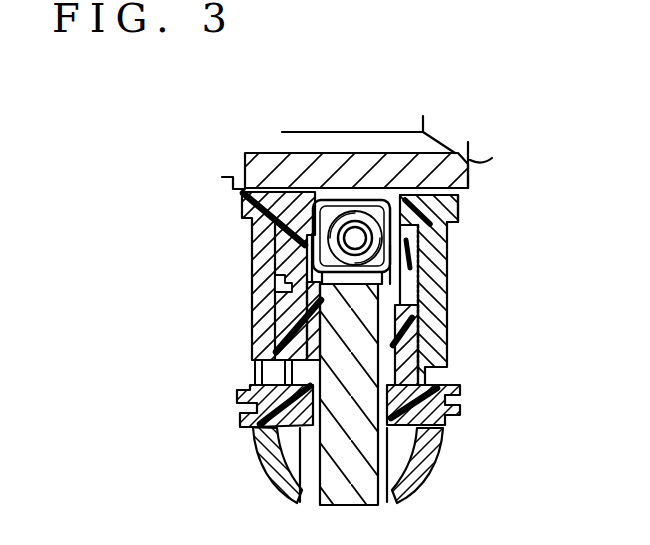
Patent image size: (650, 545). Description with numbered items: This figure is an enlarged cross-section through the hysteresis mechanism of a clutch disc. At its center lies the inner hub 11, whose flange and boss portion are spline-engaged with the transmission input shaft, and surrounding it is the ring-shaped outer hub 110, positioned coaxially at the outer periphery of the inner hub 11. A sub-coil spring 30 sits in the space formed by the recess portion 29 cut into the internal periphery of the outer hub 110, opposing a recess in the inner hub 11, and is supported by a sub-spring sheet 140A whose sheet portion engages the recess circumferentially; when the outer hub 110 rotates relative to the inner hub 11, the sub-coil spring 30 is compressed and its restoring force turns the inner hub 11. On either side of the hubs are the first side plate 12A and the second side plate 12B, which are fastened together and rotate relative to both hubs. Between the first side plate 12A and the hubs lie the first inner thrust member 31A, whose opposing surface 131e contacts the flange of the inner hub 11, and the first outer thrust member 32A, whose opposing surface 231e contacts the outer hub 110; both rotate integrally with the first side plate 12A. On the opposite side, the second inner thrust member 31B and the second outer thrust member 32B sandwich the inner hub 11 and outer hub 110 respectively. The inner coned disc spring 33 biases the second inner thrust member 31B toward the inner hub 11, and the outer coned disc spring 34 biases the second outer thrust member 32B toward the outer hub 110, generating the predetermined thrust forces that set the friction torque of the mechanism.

The inner hub 11 is at (468, 152).
The sub-coil spring 30 is at (453, 191).
The first inner thrust member 31A is at (247, 204).
The second inner thrust member 31B is at (460, 217).
The recess portion 29 is at (247, 243).
The inner coned disc spring 33 is at (447, 283).
The outer coned disc spring 34 is at (447, 343).
The opposing surface 131e is at (328, 207).
The sub-spring sheet 140A is at (373, 287).
The opposing surface 231e is at (365, 355).
The outer hub 110 is at (367, 482).
The first outer thrust member 32A is at (240, 389).
The second outer thrust member 32B is at (447, 392).
The first side plate 12A is at (254, 452).
The second side plate 12B is at (437, 452).